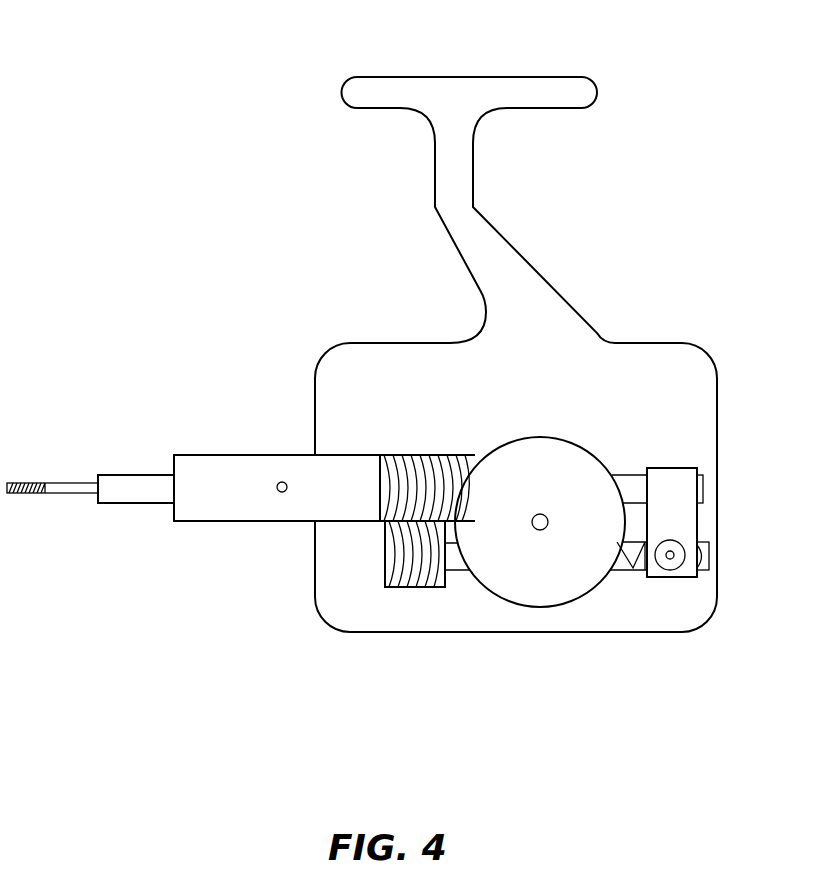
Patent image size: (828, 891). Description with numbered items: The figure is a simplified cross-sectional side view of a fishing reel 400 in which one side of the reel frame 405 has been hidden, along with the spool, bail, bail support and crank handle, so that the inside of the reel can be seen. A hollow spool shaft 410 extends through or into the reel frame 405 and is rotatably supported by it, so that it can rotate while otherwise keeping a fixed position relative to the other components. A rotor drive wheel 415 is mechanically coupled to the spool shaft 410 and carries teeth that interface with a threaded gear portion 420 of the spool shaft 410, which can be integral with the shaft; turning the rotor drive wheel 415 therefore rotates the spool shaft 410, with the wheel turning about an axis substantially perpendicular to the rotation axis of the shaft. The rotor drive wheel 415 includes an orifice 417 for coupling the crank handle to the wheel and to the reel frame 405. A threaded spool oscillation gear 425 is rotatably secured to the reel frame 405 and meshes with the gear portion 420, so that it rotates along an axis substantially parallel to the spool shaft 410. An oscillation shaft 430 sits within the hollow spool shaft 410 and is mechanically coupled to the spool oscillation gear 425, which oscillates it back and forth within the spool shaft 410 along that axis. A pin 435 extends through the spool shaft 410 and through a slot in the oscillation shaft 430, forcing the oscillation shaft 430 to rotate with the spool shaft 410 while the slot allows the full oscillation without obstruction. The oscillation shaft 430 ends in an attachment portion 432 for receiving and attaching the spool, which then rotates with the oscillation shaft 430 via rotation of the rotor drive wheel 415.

The fishing reel 400 is at (132, 120).
The reel frame 405 is at (435, 175).
The hollow spool shaft 410 is at (230, 455).
The rotor drive wheel 415 is at (545, 590).
The orifice 417 is at (548, 516).
The threaded gear portion 420 is at (427, 455).
The threaded spool oscillation gear 425 is at (412, 587).
The oscillation shaft 430 is at (135, 475).
The attachment portion 432 is at (58, 483).
The pin 435 is at (277, 491).